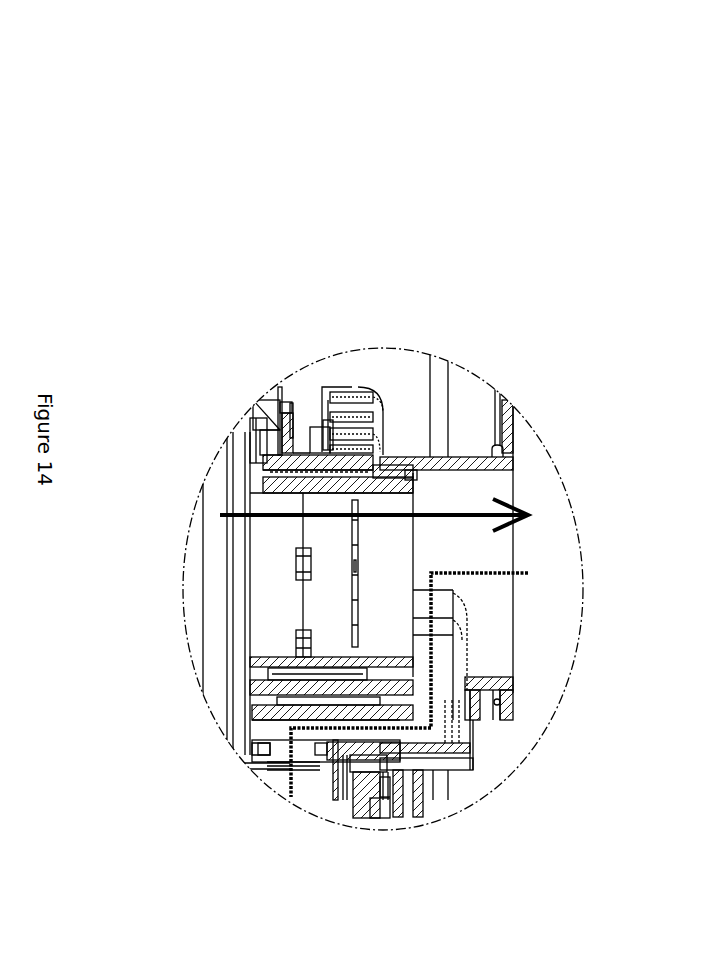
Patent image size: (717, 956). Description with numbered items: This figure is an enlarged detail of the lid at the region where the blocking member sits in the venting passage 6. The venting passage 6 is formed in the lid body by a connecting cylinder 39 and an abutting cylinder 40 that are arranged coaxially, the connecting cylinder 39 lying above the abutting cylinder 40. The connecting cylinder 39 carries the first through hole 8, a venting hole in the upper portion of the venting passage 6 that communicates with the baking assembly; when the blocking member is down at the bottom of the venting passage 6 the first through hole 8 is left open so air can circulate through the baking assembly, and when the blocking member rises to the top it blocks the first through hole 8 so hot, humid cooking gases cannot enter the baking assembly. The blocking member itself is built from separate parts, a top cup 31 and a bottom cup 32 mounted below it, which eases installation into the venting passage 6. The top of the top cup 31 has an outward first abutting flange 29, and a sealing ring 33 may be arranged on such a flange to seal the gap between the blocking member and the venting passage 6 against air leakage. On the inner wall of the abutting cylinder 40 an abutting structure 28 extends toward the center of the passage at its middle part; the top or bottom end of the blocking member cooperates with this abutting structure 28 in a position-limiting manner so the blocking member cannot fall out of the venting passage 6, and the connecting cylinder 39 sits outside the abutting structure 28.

The venting passage 6 is at (497, 550).
The first through hole 8 is at (440, 687).
The abutting structure 28 is at (382, 475).
The first abutting flange 29 is at (423, 467).
The top cup 31 is at (325, 448).
The bottom cup 32 is at (260, 485).
The sealing ring 33 is at (257, 473).
The connecting cylinder 39 is at (467, 679).
The abutting cylinder 40 is at (350, 432).